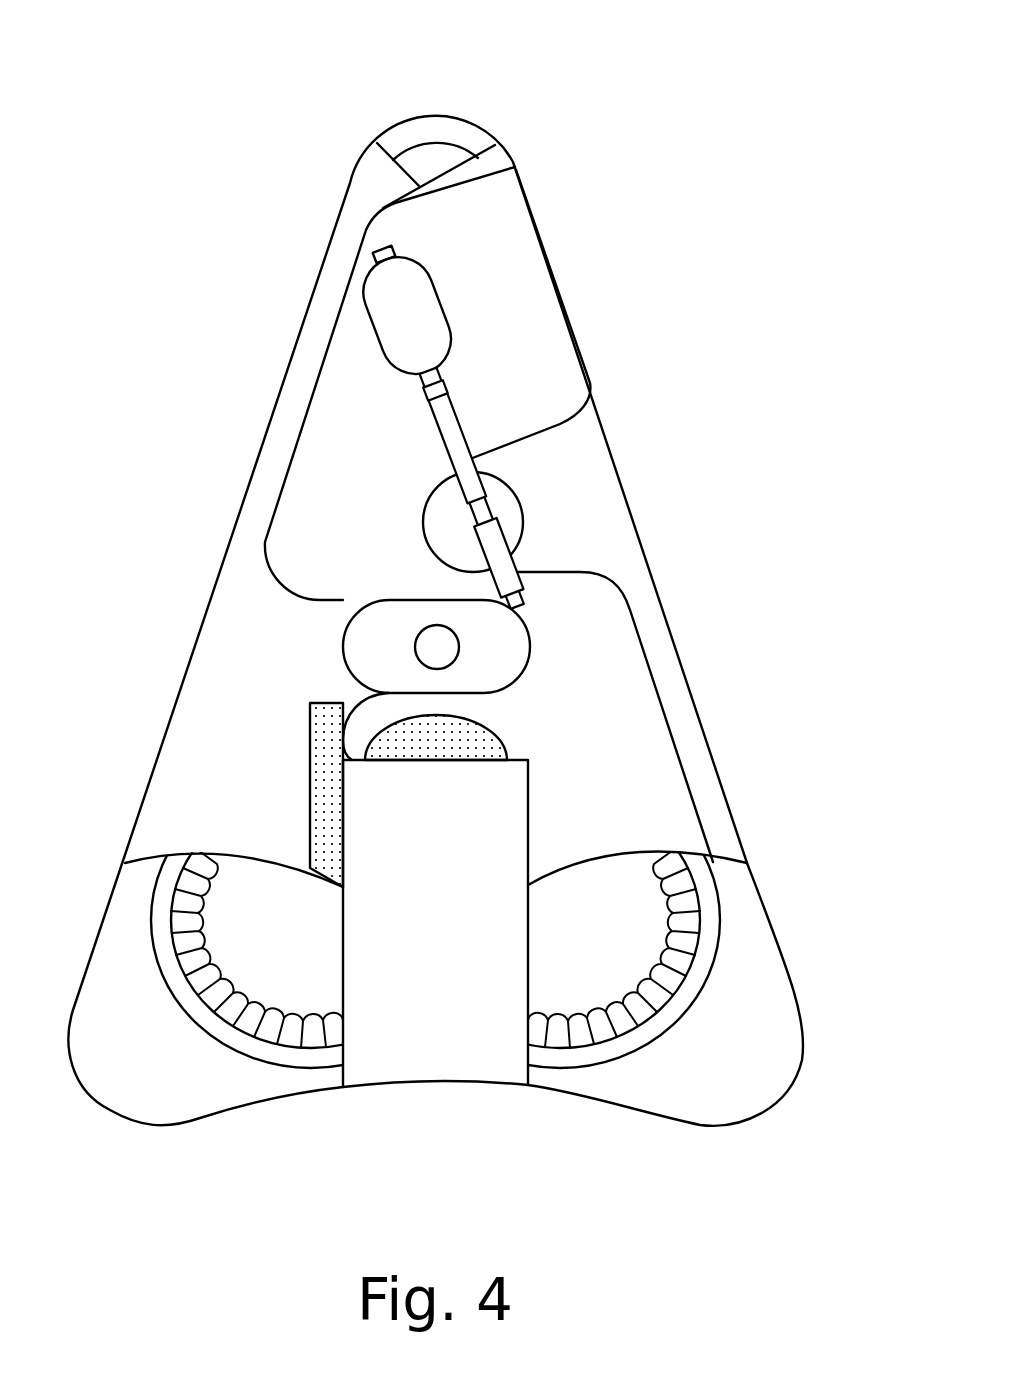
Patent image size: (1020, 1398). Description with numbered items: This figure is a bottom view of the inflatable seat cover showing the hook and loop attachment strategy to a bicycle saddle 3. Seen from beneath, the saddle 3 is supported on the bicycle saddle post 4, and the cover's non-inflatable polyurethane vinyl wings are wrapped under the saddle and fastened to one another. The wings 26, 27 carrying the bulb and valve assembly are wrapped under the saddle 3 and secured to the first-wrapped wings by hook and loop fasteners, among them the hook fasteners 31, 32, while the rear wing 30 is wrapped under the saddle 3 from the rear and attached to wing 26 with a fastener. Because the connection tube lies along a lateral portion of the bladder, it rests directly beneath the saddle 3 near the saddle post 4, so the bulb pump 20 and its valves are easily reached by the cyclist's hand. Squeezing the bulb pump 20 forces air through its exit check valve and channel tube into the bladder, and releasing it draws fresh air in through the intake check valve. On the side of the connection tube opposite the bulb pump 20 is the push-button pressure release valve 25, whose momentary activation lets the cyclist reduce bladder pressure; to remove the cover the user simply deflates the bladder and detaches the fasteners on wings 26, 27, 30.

The saddle 3 is at (428, 152).
The bicycle saddle post 4 is at (437, 652).
The bulb pump 20 is at (417, 313).
The pressure release valve 25 is at (498, 557).
The wing 26 is at (355, 738).
The wing 27 is at (323, 453).
The wing 30 is at (445, 975).
The hook fastener 31 is at (322, 777).
The hook fastener 32 is at (460, 742).